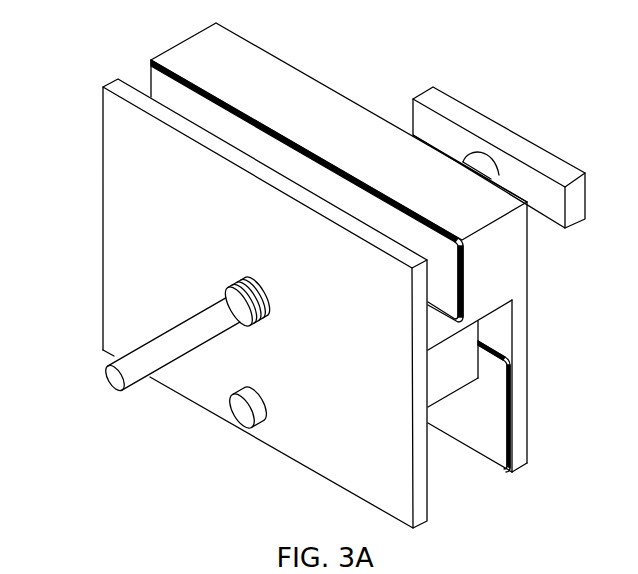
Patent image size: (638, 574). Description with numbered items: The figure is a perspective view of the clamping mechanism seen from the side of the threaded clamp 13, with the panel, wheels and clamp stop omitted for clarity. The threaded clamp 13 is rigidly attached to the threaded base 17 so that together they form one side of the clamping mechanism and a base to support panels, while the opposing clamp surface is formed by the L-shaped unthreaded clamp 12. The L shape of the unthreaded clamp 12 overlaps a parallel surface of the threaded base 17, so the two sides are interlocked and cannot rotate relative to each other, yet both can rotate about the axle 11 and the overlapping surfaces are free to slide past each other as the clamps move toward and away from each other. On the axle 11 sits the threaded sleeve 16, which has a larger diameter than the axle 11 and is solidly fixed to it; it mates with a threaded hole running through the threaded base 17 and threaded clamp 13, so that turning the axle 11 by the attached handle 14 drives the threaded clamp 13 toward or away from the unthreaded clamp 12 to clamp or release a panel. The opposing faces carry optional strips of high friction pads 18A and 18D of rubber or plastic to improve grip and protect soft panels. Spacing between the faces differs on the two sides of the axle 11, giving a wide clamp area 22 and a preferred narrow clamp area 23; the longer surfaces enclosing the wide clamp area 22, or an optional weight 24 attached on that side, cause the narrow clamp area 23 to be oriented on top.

The axle 11 is at (103, 365).
The unthreaded clamp 12 is at (358, 160).
The threaded clamp 13 is at (327, 373).
The handle 14 is at (522, 107).
The threaded sleeve 16 is at (225, 277).
The threaded base 17 is at (447, 369).
The high friction pad 18A is at (472, 432).
The high friction pad 18D is at (442, 291).
The wide clamp area 22 is at (442, 472).
The narrow clamp area 23 is at (142, 82).
The weight 24 is at (247, 420).